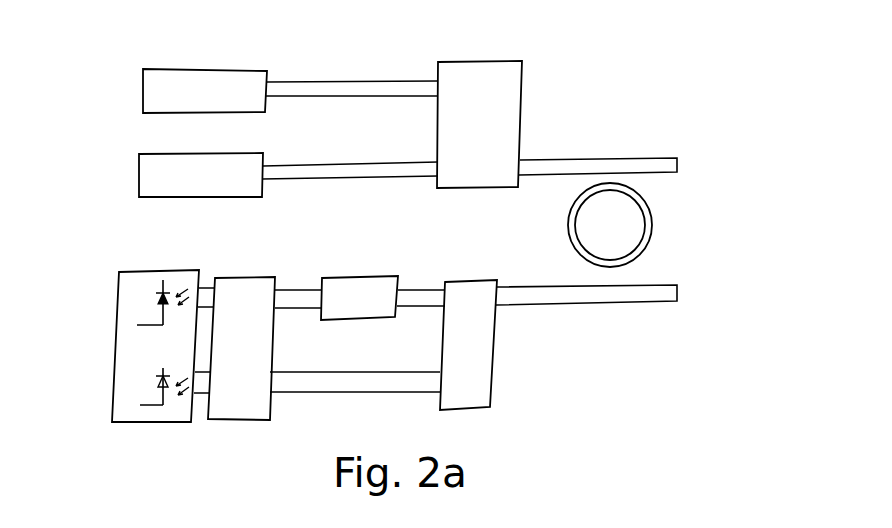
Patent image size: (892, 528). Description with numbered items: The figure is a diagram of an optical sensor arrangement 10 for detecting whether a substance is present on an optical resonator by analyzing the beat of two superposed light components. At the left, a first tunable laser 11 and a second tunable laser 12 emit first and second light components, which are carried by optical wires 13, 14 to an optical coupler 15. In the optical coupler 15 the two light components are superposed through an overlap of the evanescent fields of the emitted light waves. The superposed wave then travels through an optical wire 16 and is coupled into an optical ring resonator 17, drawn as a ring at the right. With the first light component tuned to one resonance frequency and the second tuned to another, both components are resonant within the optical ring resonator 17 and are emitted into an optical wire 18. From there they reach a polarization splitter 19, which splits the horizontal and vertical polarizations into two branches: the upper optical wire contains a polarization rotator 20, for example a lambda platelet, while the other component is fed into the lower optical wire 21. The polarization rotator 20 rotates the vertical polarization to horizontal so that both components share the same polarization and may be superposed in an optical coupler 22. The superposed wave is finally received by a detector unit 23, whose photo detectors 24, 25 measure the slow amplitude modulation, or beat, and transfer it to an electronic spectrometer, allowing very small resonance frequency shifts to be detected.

The optical sensor arrangement 10 is at (631, 69).
The first tunable laser 11 is at (255, 70).
The second tunable laser 12 is at (253, 154).
The optical wire 13 is at (357, 82).
The optical wire 14 is at (355, 165).
The optical coupler 15 is at (493, 62).
The optical wire 16 is at (562, 159).
The optical ring resonator 17 is at (651, 232).
The optical wire 18 is at (548, 305).
The polarization splitter 19 is at (470, 281).
The polarization rotator 20 is at (358, 278).
The lower optical wire 21 is at (340, 372).
The optical coupler 22 is at (252, 277).
The detector unit 23 is at (179, 270).
The photo detector 24 is at (158, 302).
The photo detector 25 is at (157, 386).